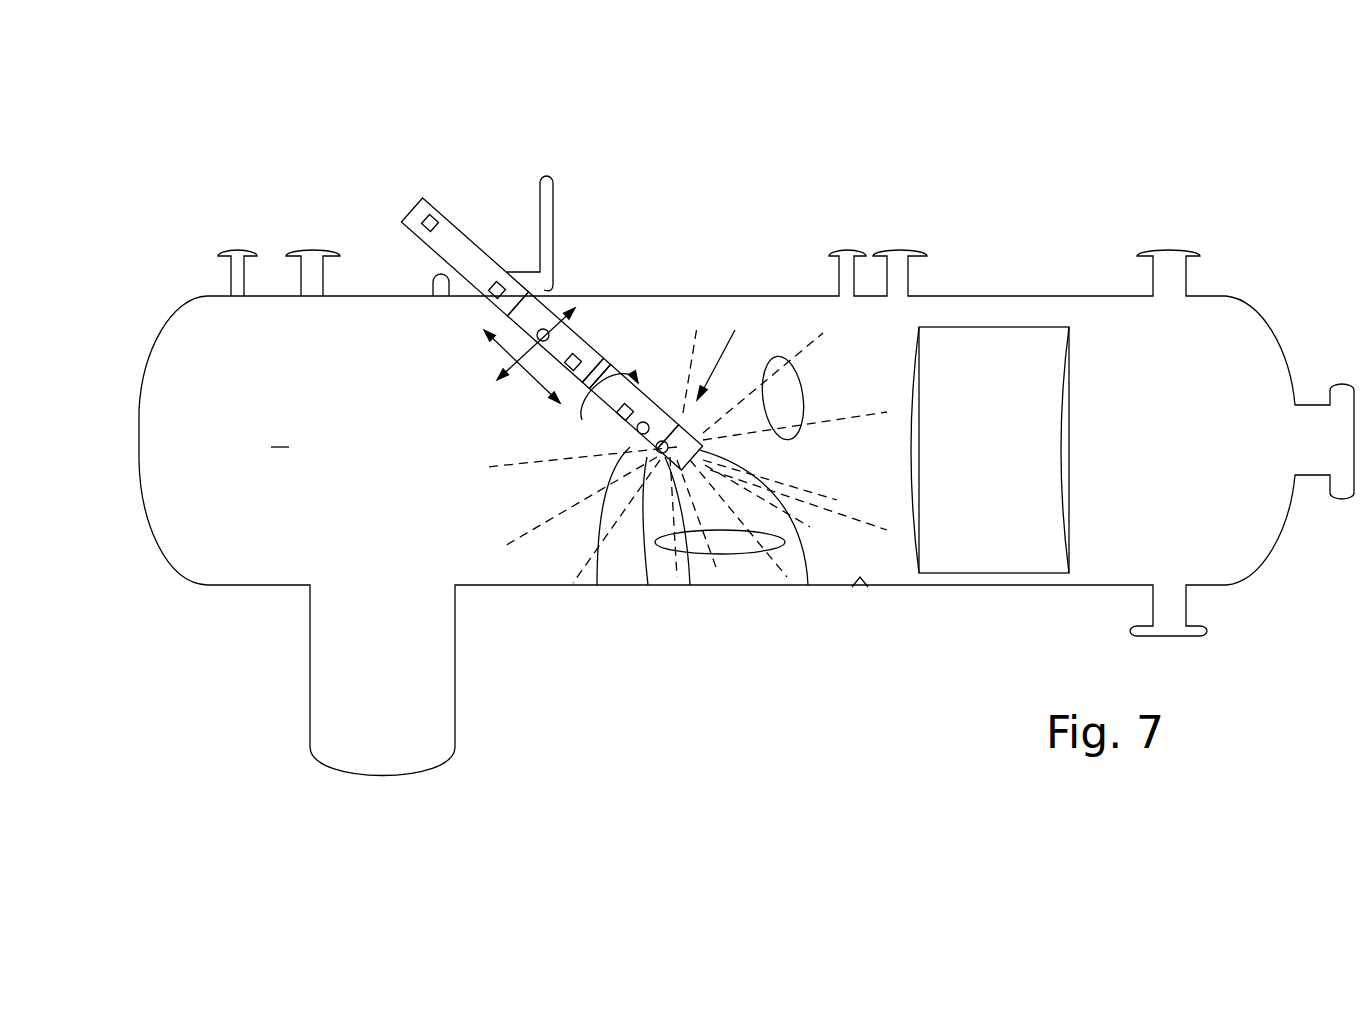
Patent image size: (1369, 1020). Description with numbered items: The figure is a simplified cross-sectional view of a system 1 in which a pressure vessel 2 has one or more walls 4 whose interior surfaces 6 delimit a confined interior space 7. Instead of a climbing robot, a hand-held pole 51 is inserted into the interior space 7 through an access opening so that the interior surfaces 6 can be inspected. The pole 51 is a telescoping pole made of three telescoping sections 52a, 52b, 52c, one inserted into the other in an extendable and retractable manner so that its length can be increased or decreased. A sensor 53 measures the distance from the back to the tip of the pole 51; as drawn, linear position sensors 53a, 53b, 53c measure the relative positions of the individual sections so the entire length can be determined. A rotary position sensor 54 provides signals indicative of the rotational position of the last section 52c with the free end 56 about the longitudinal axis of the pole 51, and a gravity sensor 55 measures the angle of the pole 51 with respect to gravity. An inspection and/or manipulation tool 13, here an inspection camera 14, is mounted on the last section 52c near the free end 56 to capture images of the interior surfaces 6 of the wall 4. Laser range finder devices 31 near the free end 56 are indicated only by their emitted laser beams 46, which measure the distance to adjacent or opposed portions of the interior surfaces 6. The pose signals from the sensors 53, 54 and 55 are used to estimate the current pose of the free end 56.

The system 1 is at (147, 192).
The pressure vessel 2 is at (172, 298).
The wall 4 is at (140, 413).
The interior surface 6 is at (1087, 354).
The interior space 7 is at (280, 434).
The inspection and/or manipulation tool 13 is at (703, 390).
The inspection camera 14 is at (808, 585).
The laser range finder device 31 is at (648, 585).
The laser beam 46 is at (788, 357).
The hand-held pole 51 is at (447, 198).
The telescoping section 52a is at (420, 225).
The telescoping section 52b is at (537, 337).
The last telescoping section 52c is at (614, 370).
The sensor 53 is at (420, 233).
The linear position sensor 53a is at (497, 283).
The linear position sensor 53b is at (577, 355).
The linear position sensor 53c is at (630, 405).
The rotary position sensor 54 is at (597, 585).
The gravity sensor 55 is at (537, 338).
The free end 56 is at (690, 585).